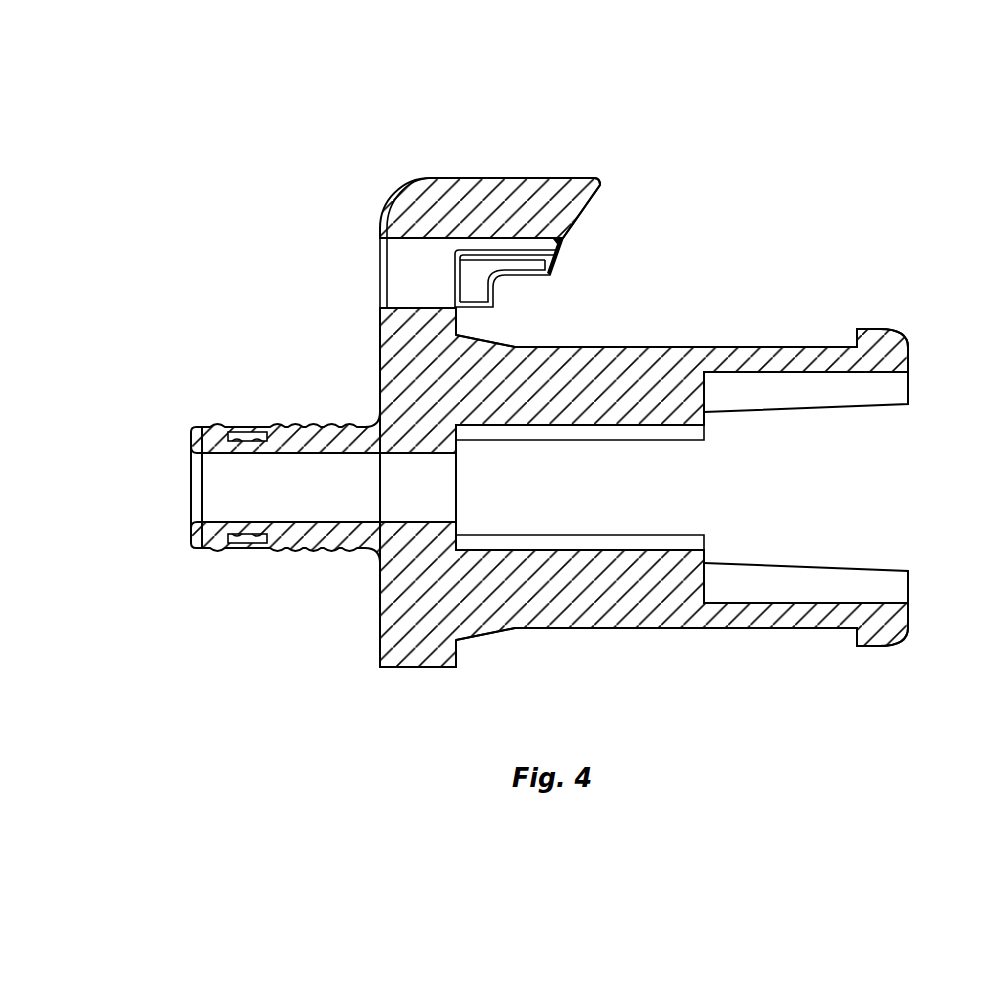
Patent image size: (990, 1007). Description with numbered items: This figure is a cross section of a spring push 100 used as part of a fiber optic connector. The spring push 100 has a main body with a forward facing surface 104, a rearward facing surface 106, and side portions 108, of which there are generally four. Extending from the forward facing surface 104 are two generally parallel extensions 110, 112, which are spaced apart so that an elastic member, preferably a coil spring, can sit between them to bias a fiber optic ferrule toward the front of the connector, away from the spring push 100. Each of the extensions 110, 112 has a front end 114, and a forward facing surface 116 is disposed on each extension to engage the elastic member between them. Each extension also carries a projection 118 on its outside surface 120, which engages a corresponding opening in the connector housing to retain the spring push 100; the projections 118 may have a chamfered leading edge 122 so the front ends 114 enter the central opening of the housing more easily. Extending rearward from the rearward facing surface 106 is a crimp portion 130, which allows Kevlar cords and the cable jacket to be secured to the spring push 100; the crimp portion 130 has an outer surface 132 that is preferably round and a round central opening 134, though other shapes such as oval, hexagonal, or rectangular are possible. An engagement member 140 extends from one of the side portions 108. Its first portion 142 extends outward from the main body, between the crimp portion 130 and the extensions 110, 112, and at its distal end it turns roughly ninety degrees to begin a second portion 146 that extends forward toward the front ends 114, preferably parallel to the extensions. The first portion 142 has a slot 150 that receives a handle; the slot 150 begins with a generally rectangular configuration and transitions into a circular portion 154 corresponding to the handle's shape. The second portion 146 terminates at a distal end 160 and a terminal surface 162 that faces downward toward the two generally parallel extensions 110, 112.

The spring push 100 is at (603, 123).
The forward facing surface 104 is at (458, 650).
The rearward facing surface 106 is at (379, 396).
The side portions 108 is at (418, 668).
The generally parallel extension 110 is at (722, 629).
The generally parallel extension 112 is at (603, 347).
The front end 114 is at (910, 370).
The forward facing surface 116 is at (704, 433).
The projection 118 is at (857, 330).
The outside surface 120 is at (673, 347).
The chamfered leading edge 122 is at (910, 636).
The crimp portion 130 is at (191, 549).
The outer surface 132 is at (312, 549).
The central opening 134 is at (220, 476).
The engagement member 140 is at (405, 165).
The first portion 142 is at (380, 228).
The second portion 146 is at (527, 178).
The slot 150 is at (379, 306).
The circular portion 154 is at (412, 276).
The distal end 160 is at (600, 180).
The terminal surface 162 is at (592, 205).